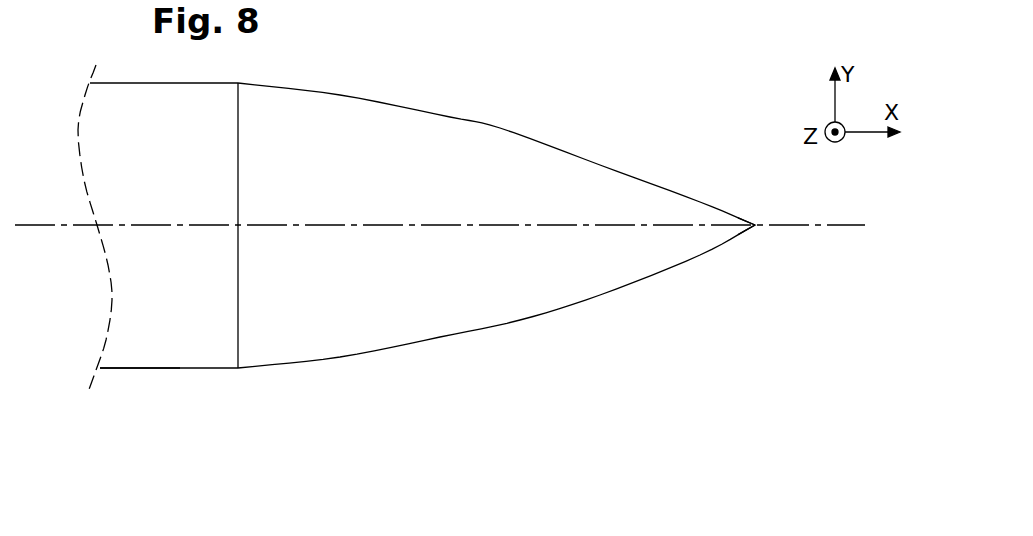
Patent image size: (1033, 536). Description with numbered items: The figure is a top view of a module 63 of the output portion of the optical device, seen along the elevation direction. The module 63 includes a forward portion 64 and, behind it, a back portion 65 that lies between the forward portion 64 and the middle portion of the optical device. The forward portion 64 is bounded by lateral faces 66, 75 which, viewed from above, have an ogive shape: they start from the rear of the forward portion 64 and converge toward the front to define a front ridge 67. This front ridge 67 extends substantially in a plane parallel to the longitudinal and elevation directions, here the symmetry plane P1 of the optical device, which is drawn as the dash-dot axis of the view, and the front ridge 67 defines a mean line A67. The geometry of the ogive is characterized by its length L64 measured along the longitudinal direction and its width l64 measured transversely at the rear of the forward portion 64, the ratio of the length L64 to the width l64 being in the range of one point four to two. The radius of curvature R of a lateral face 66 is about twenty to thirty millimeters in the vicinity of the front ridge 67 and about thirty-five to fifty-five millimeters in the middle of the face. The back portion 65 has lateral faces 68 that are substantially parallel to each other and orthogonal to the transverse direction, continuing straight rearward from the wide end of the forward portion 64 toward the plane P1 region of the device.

The module 63 is at (783, 303).
The forward portion 64 is at (424, 256).
The back portion 65 is at (159, 379).
The lateral faces 66 is at (496, 150).
The curved surface 75 is at (525, 134).
The front ridge 67 is at (755, 225).
The mean line A67 is at (757, 227).
The lateral faces 68 is at (135, 371).
The symmetry plane P1 is at (33, 228).
The radius of curvature R is at (495, 128).
The width l64 is at (223, 368).
The length L64 is at (755, 422).